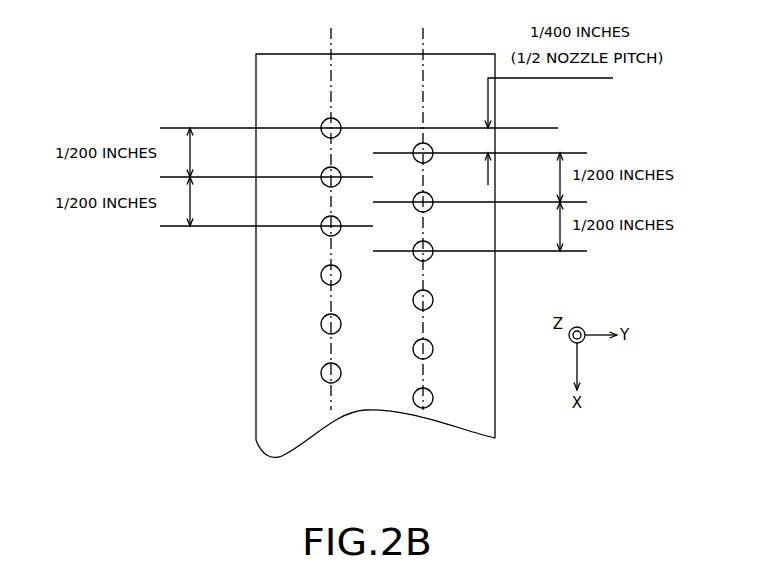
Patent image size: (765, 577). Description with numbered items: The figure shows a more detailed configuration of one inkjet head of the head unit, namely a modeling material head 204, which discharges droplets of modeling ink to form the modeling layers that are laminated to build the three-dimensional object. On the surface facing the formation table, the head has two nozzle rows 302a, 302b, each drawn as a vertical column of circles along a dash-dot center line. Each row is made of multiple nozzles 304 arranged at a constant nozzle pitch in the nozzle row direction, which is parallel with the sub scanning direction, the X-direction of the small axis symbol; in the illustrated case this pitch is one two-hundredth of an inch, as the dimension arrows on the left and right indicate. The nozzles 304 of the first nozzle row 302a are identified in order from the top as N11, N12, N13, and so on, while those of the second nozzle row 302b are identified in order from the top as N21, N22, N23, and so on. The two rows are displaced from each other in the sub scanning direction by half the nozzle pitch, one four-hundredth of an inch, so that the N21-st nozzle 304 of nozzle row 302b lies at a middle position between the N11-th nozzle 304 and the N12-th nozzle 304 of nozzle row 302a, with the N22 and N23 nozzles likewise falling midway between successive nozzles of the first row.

The modeling material head 204 is at (100, 73).
The nozzle row 302a is at (342, 97).
The nozzle row 302b is at (431, 107).
The nozzle 304 is at (410, 289).
The N11-th nozzle N11 is at (320, 118).
The N12-th nozzle N12 is at (318, 168).
The N13-th nozzle N13 is at (318, 222).
The N21-st nozzle N21 is at (438, 151).
The N22-nd nozzle N22 is at (438, 196).
The N23-rd nozzle N23 is at (437, 244).